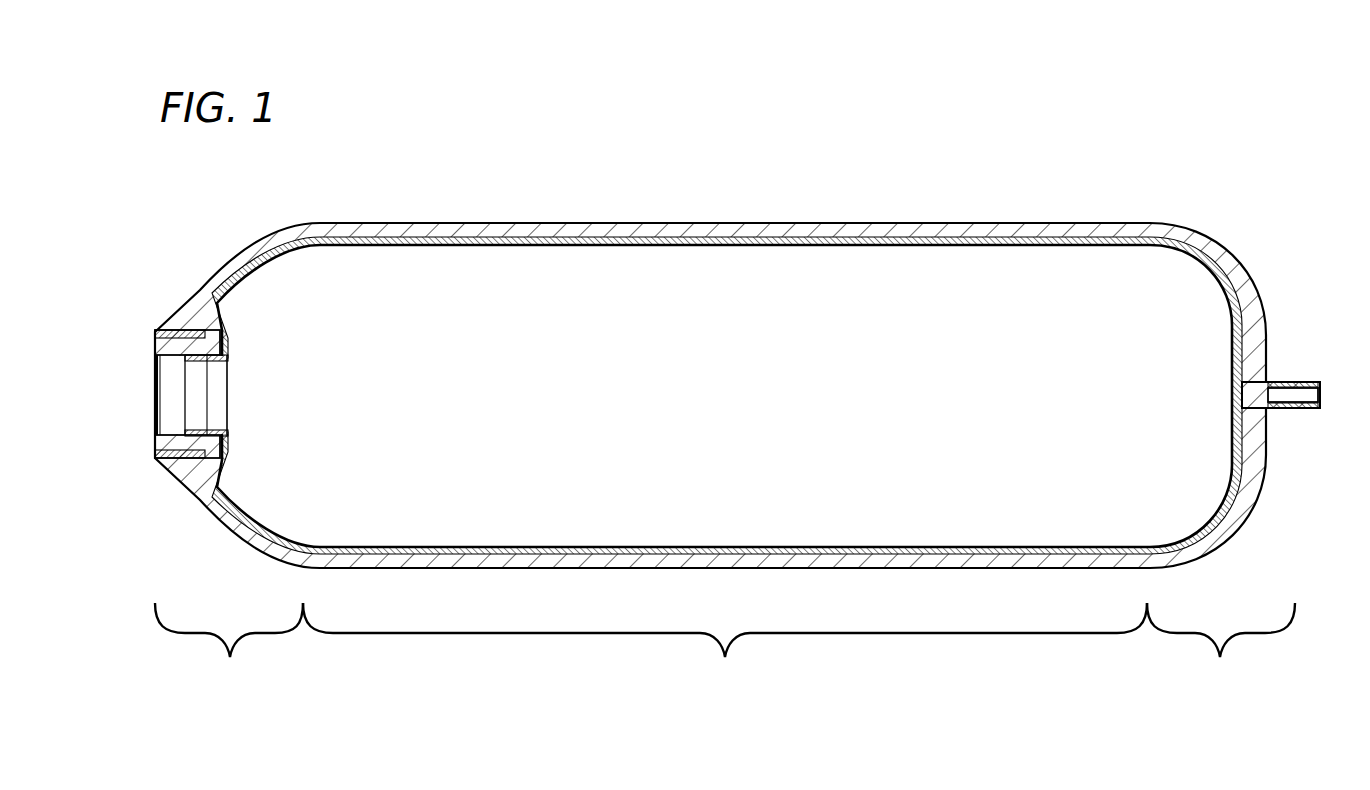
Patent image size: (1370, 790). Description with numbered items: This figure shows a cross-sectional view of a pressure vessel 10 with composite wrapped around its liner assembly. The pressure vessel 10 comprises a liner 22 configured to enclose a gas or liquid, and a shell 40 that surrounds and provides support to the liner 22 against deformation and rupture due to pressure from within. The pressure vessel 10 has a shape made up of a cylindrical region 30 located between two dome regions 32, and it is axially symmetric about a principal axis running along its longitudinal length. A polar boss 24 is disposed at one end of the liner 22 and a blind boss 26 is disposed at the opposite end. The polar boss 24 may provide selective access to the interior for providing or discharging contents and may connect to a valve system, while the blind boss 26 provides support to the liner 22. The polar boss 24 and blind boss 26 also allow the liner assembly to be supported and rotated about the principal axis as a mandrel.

The pressure vessel 10 is at (1094, 135).
The liner 22 is at (487, 240).
The shell 40 is at (797, 225).
The polar boss 24 is at (168, 387).
The blind boss 26 is at (1262, 385).
The cylindrical region 30 is at (725, 649).
The dome regions 32 is at (725, 649).